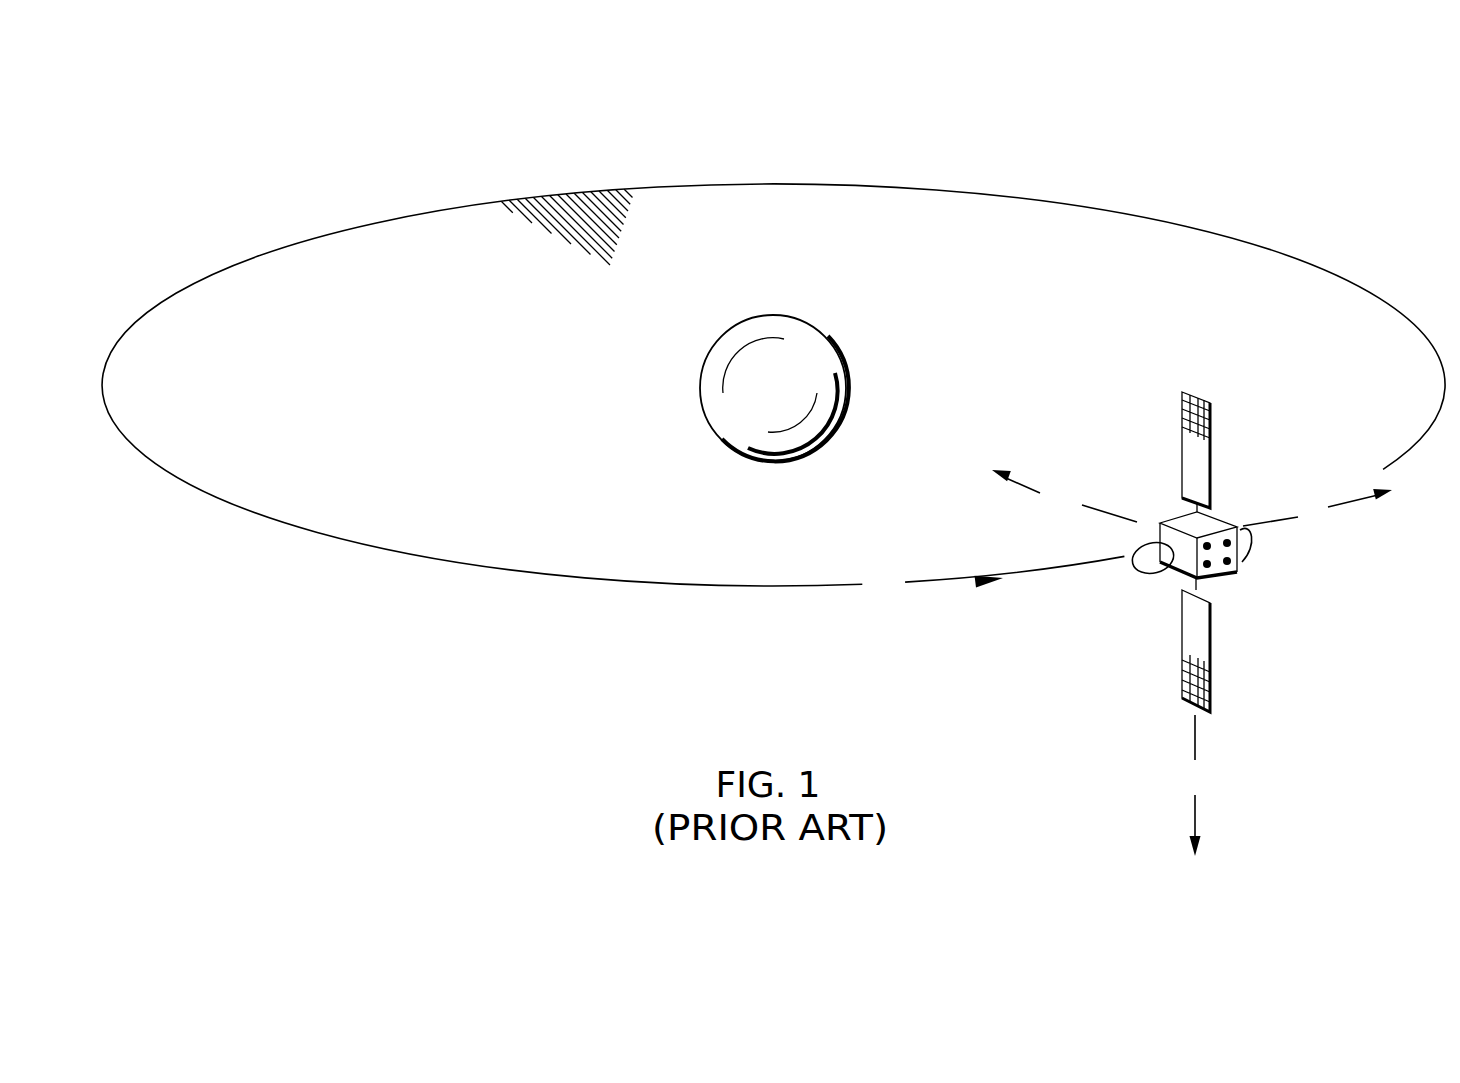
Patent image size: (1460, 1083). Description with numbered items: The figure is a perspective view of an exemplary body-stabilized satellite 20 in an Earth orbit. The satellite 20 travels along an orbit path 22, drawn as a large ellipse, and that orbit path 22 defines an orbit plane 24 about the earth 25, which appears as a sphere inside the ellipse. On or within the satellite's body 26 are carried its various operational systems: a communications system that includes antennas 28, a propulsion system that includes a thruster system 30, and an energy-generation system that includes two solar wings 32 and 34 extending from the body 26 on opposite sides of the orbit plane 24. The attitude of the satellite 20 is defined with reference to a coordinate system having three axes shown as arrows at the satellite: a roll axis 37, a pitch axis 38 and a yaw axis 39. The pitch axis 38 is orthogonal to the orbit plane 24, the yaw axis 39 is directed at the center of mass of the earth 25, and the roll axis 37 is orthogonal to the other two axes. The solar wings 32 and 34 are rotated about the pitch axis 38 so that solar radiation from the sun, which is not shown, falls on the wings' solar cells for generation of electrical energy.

The body-stabilized satellite 20 is at (1134, 561).
The orbit path 22 is at (773, 393).
The orbit plane 24 is at (578, 210).
The earth 25 is at (747, 317).
The satellite body 26 is at (1172, 508).
The antennas 28 is at (1149, 548).
The thruster system 30 is at (1243, 516).
The solar wing 32 is at (1193, 423).
The solar wing 34 is at (1187, 685).
The roll axis 37 is at (1317, 508).
The pitch axis 38 is at (1195, 785).
The yaw axis 39 is at (1064, 496).